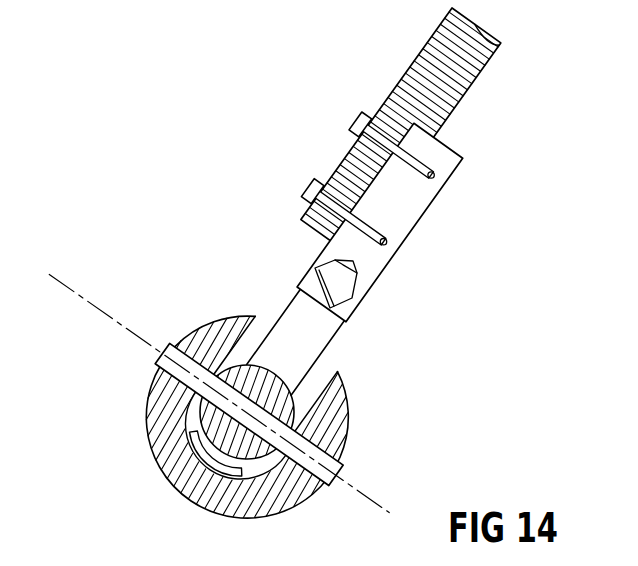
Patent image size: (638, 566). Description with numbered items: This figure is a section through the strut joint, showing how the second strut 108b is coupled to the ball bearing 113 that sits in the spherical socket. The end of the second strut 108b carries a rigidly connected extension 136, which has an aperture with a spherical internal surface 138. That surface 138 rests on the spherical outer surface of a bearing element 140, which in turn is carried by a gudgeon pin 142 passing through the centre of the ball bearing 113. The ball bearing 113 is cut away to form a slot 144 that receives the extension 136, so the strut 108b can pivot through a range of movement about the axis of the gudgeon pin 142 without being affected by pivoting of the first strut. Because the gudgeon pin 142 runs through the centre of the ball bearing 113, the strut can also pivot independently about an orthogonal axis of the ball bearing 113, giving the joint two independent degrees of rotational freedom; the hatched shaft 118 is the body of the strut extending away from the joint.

The second strut 108b is at (403, 97).
The ball bearing 113 is at (195, 335).
The shaft 118 is at (478, 76).
The extension 136 is at (317, 335).
The spherical internal surface 138 is at (290, 394).
The bearing element 140 is at (207, 437).
The gudgeon pin 142 is at (325, 461).
The slot 144 is at (263, 323).